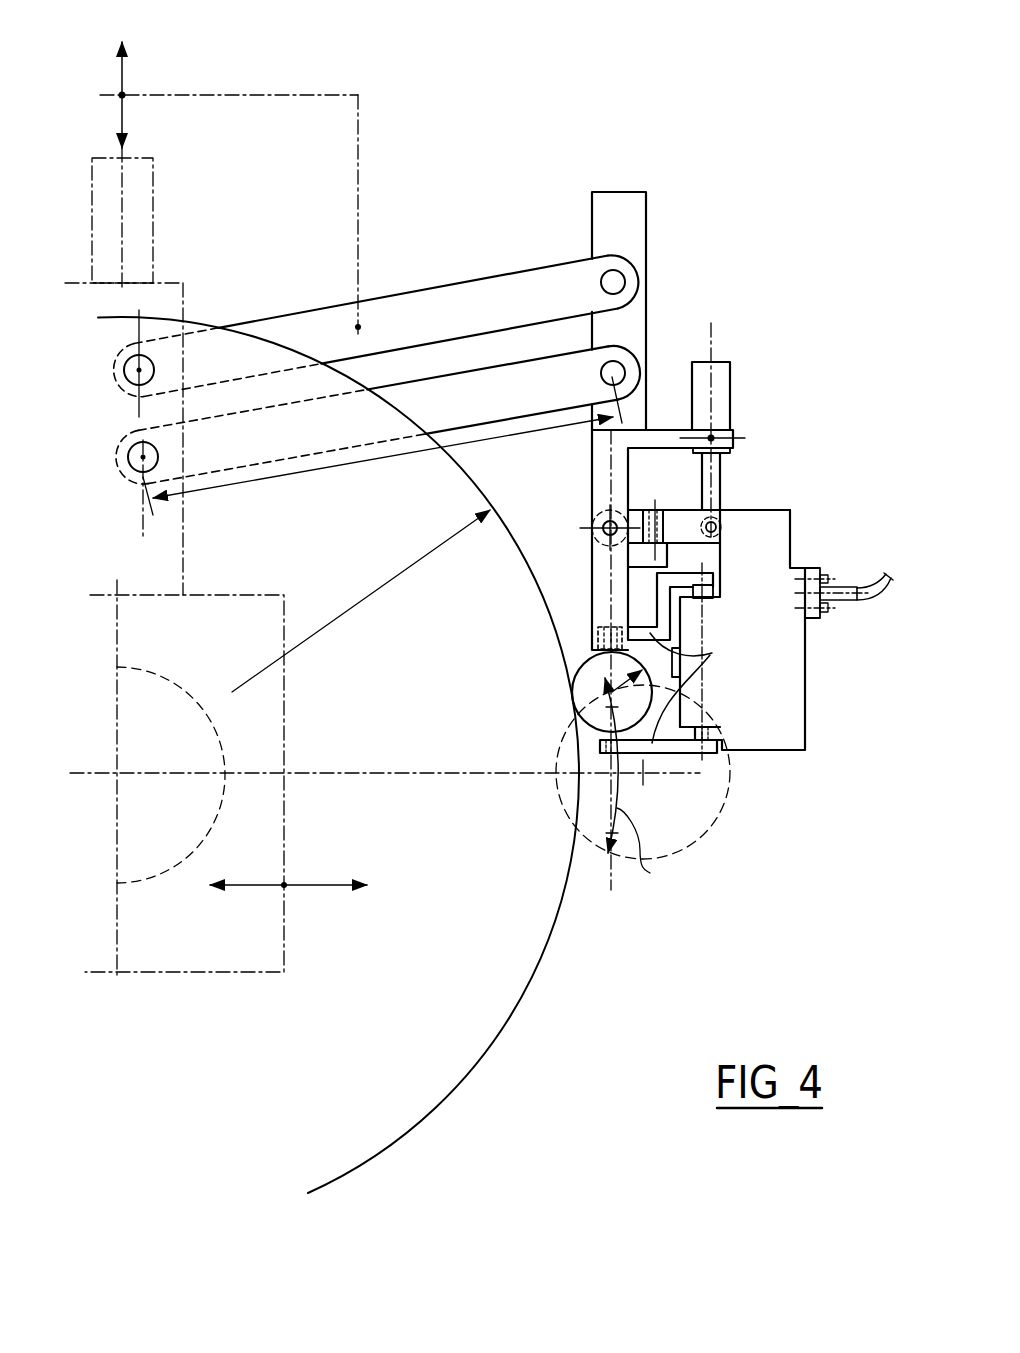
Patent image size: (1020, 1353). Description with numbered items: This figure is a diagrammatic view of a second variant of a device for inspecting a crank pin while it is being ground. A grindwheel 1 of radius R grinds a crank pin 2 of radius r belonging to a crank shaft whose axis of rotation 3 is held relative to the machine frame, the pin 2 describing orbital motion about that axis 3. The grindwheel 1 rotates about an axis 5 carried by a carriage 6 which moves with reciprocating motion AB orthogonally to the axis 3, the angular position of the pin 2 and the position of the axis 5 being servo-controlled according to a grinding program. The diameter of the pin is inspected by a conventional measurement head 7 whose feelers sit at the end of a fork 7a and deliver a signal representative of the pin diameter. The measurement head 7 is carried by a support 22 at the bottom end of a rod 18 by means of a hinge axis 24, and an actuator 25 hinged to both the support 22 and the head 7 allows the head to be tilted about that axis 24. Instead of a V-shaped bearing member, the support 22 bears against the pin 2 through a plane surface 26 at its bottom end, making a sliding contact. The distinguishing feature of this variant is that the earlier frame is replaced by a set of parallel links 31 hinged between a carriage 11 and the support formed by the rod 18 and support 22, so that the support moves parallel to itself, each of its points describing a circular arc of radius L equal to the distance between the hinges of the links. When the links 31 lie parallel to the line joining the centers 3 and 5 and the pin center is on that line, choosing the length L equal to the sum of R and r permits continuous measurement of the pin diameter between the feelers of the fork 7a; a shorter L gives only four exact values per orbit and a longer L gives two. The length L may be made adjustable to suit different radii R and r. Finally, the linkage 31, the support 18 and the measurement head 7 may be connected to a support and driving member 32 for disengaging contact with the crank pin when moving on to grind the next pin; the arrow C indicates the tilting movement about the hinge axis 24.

The grindwheel 1 is at (540, 962).
The crank pin 2 is at (583, 688).
The axis of rotation of the crank shaft 3 is at (643, 770).
The axis of the grindwheel 5 is at (118, 775).
The carriage 6 is at (287, 800).
The measurement head 7 is at (785, 700).
The fork 7a is at (702, 685).
The carriage 11 is at (170, 525).
The rod 18 is at (622, 213).
The support 22 is at (600, 478).
The hinge axis 24 is at (603, 530).
The actuator 25 is at (720, 387).
The plane surface 26 is at (602, 654).
The parallel links 31 is at (448, 397).
The support and driving member 32 is at (288, 94).
The radius of the tool R is at (361, 601).
The length of the links L is at (382, 446).
The radius of the pin r is at (627, 672).
The pivot direction C is at (639, 789).
The reciprocating motion direction A is at (244, 909).
The reciprocating motion direction B is at (329, 905).